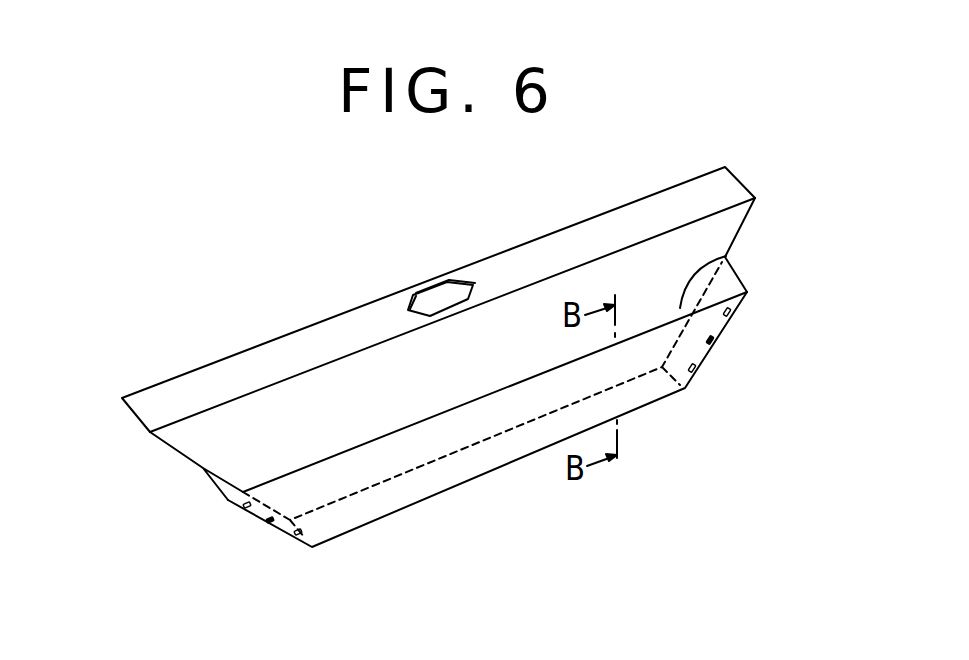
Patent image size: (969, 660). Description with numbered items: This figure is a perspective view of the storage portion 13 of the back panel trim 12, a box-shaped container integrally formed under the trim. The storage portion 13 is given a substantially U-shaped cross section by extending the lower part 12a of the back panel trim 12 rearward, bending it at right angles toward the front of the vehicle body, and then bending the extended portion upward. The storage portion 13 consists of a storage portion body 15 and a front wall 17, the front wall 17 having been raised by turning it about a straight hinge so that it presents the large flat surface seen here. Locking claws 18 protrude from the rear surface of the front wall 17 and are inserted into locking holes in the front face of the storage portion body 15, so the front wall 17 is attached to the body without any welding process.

The back panel trim 12 is at (259, 323).
The lower part of the back panel trim 12a is at (178, 457).
The storage portion 13 is at (725, 250).
The storage portion body 15 is at (647, 390).
The front wall 17 is at (433, 438).
The locking claws 18 is at (270, 522).